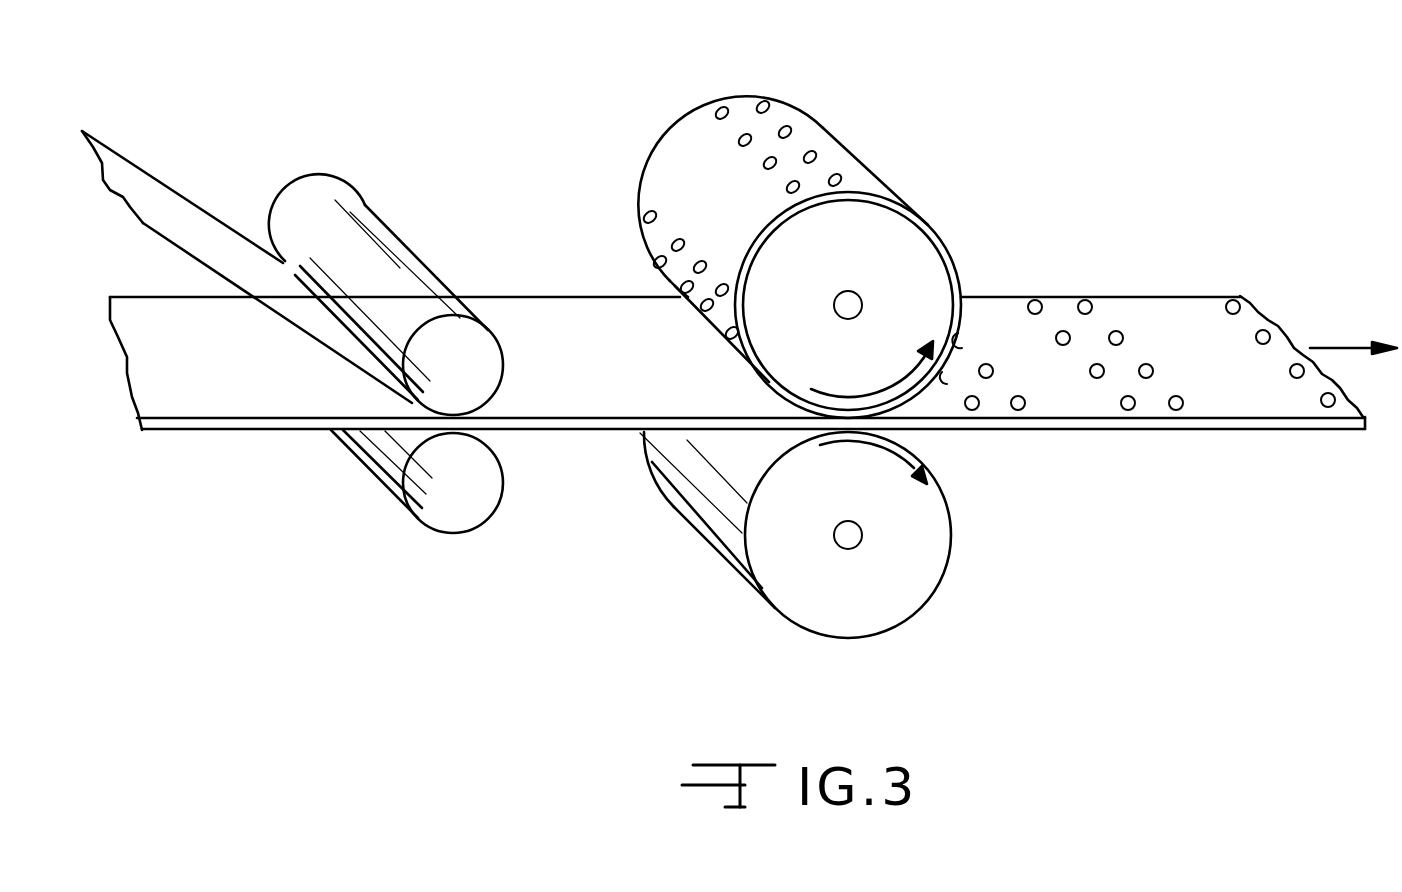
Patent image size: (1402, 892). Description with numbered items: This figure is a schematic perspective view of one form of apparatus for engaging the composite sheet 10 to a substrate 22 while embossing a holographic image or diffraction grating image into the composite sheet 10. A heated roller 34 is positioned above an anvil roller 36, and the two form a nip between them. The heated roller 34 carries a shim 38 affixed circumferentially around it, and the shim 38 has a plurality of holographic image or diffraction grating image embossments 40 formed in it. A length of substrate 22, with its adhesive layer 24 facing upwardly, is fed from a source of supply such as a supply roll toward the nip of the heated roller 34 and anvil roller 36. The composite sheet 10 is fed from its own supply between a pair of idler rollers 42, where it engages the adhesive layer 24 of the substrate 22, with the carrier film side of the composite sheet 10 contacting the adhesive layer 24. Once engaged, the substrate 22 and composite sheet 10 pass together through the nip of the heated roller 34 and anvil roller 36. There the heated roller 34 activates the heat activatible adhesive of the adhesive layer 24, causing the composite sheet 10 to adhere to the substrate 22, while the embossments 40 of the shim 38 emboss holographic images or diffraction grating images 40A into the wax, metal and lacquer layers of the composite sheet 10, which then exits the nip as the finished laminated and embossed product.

The composite sheet 10 is at (188, 190).
The substrate 22 is at (207, 428).
The adhesive layer 24 is at (233, 360).
The heated roller 34 is at (922, 257).
The anvil roller 36 is at (931, 559).
The shim 38 is at (683, 153).
The holographic image or diffraction grating image embossments 40 is at (722, 100).
The holographic images or diffraction grating images 40A is at (1037, 297).
The idler rollers 42 is at (318, 218).